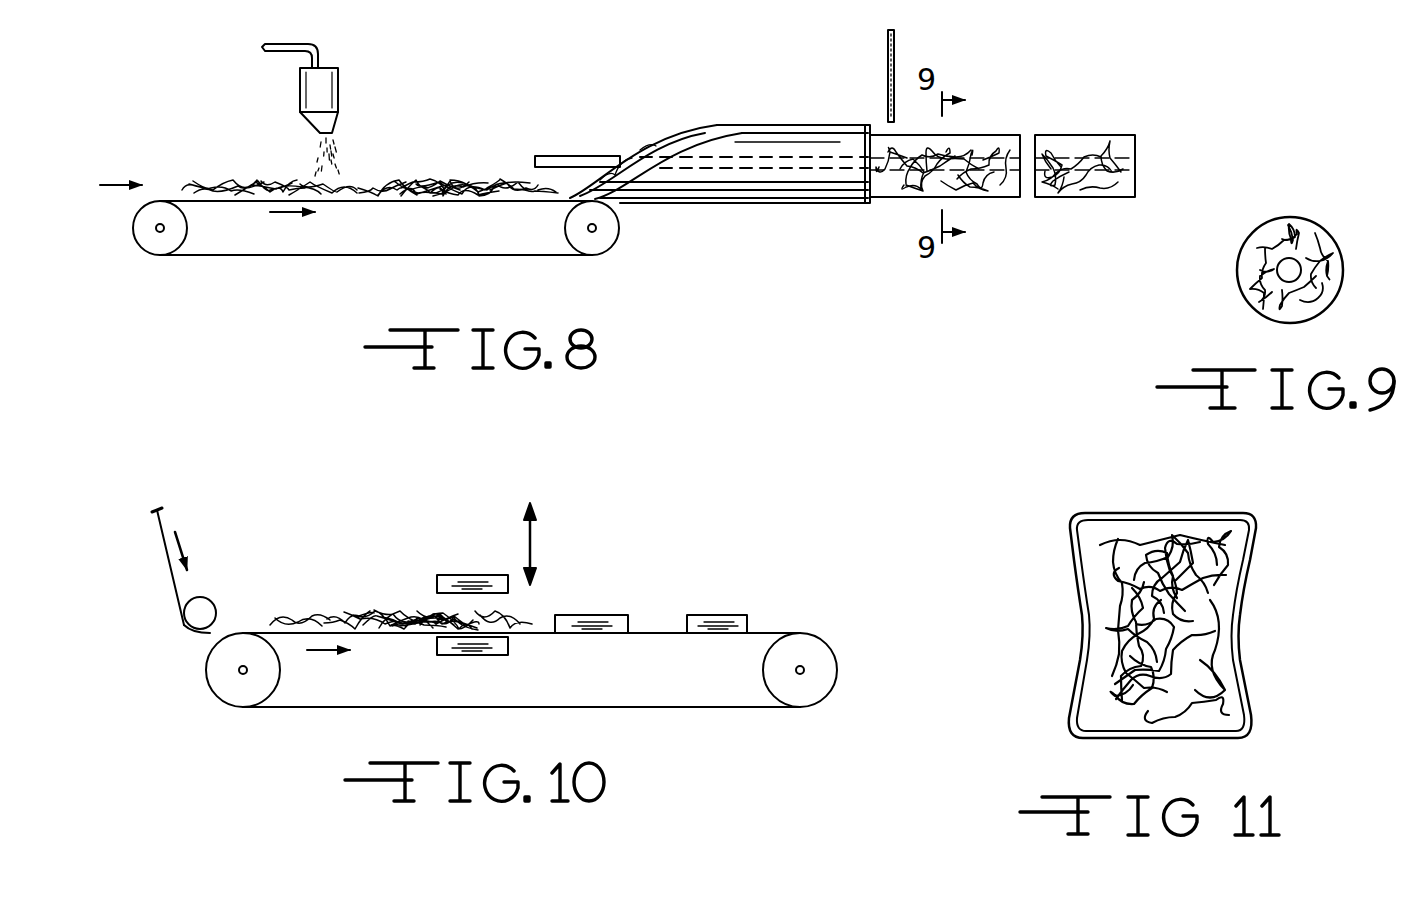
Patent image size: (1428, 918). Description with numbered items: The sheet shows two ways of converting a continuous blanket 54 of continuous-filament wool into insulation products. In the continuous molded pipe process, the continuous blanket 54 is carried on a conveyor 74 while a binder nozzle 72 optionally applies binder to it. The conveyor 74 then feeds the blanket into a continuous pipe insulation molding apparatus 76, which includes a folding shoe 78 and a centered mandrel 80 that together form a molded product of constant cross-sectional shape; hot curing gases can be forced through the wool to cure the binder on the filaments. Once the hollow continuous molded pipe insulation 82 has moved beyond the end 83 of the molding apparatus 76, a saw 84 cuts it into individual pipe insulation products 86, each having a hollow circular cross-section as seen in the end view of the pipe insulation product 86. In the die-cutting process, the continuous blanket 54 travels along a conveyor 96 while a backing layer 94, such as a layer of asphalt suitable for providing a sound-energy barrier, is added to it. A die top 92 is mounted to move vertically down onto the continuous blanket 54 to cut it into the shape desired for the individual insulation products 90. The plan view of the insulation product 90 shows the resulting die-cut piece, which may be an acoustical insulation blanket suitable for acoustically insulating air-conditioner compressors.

In FIG. 8, the continuous blanket 54 is at (216, 182).
In FIG. 10, the continuous blanket 54 is at (318, 612).
In FIG. 8, the binder nozzle 72 is at (340, 86).
In FIG. 8, the conveyor 74 is at (298, 256).
In FIG. 8, the continuous pipe insulation molding apparatus 76 is at (745, 112).
In FIG. 8, the folding shoe 78 is at (660, 138).
In FIG. 8, the centered mandrel 80 is at (562, 156).
In FIG. 8, the continuous molded pipe insulation 82 is at (887, 200).
In FIG. 8, the end of the molding apparatus 83 is at (865, 150).
In FIG. 8, the saw 84 is at (886, 52).
In FIG. 8, the pipe insulation product 86 is at (1085, 135).
In FIG. 9, the pipe insulation product 86 is at (1238, 262).
In FIG. 10, the insulation product 90 is at (720, 615).
In FIG. 11, the insulation product 90 is at (1258, 578).
In FIG. 10, the die top 92 is at (455, 575).
In FIG. 10, the backing layer 94 is at (160, 538).
In FIG. 10, the conveyor 96 is at (365, 708).